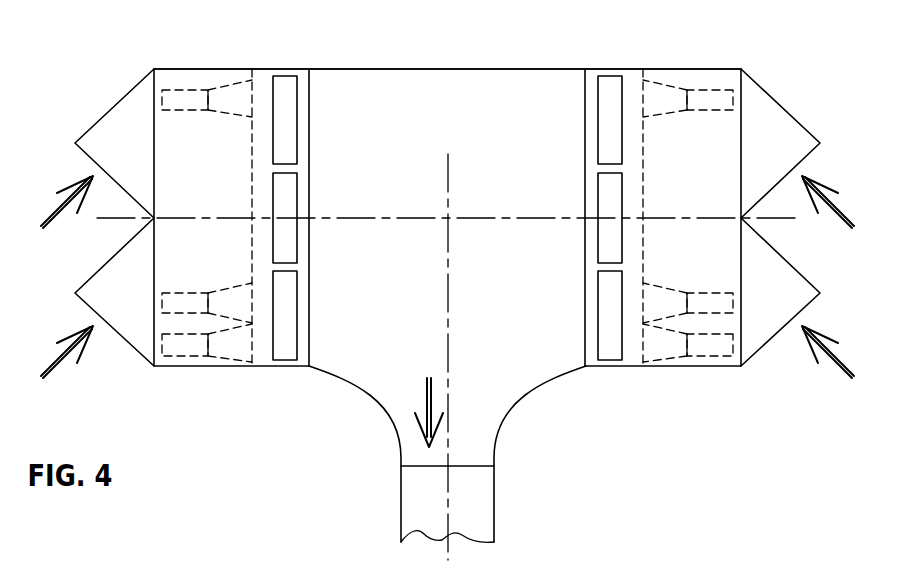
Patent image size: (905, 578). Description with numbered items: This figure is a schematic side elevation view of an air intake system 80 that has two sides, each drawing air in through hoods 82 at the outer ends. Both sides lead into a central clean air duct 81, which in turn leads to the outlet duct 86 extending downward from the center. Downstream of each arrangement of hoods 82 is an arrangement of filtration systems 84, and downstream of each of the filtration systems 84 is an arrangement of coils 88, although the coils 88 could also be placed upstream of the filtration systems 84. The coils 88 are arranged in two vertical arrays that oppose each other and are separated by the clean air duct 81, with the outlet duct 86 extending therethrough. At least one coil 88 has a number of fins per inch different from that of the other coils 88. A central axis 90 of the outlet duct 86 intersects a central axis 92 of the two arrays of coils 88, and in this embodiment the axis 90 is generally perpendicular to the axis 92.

The air intake system 80 is at (545, 56).
The clean air duct 81 is at (383, 71).
The hoods 82 is at (81, 107).
The filtration systems 84 is at (188, 82).
The outlet duct 86 is at (494, 504).
The coils 88 is at (311, 192).
The central axis of the outlet duct 90 is at (449, 387).
The central axis of the two arrays of coils 92 is at (349, 219).